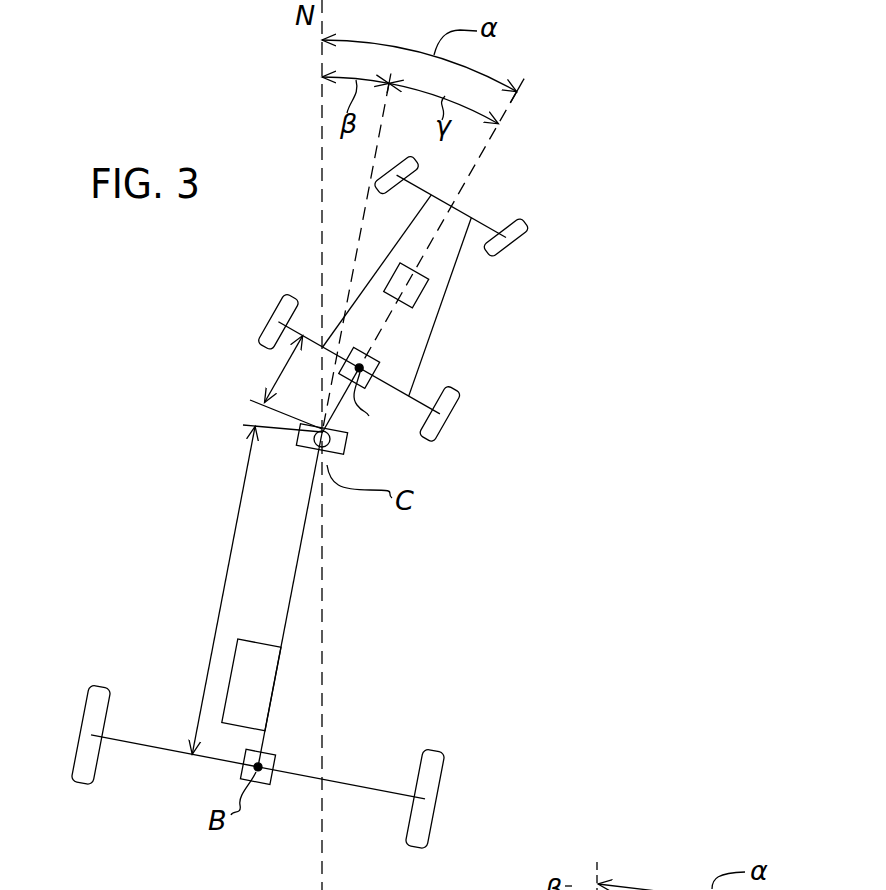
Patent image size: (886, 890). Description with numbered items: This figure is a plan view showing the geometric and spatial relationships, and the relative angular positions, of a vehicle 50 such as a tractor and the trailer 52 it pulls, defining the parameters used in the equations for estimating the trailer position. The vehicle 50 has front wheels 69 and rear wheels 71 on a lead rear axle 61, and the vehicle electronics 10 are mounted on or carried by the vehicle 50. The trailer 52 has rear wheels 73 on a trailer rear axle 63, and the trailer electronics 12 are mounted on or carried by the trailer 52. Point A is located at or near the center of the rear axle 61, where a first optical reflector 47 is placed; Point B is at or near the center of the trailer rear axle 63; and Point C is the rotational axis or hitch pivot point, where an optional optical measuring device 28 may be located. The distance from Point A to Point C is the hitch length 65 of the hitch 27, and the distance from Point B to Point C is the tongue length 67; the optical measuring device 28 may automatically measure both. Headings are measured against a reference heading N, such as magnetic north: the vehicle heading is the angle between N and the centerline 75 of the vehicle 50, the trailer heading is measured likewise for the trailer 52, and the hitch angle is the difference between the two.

The centerline 75 is at (512, 102).
The front wheels 69 is at (400, 158).
The rear wheels 71 is at (284, 306).
The vehicle 50 is at (404, 480).
The rear axle 61 is at (432, 375).
The vehicle electronics 10 is at (408, 308).
The first optical reflector 47 is at (371, 378).
The hitch length 65 is at (281, 374).
The hitch 27 is at (345, 446).
The optical measuring device 28 is at (328, 447).
The tongue length 67 is at (219, 553).
The trailer electronics 12 is at (282, 661).
The trailer rear axle 63 is at (366, 806).
The rear wheels 73 is at (98, 712).
The trailer 52 is at (302, 663).